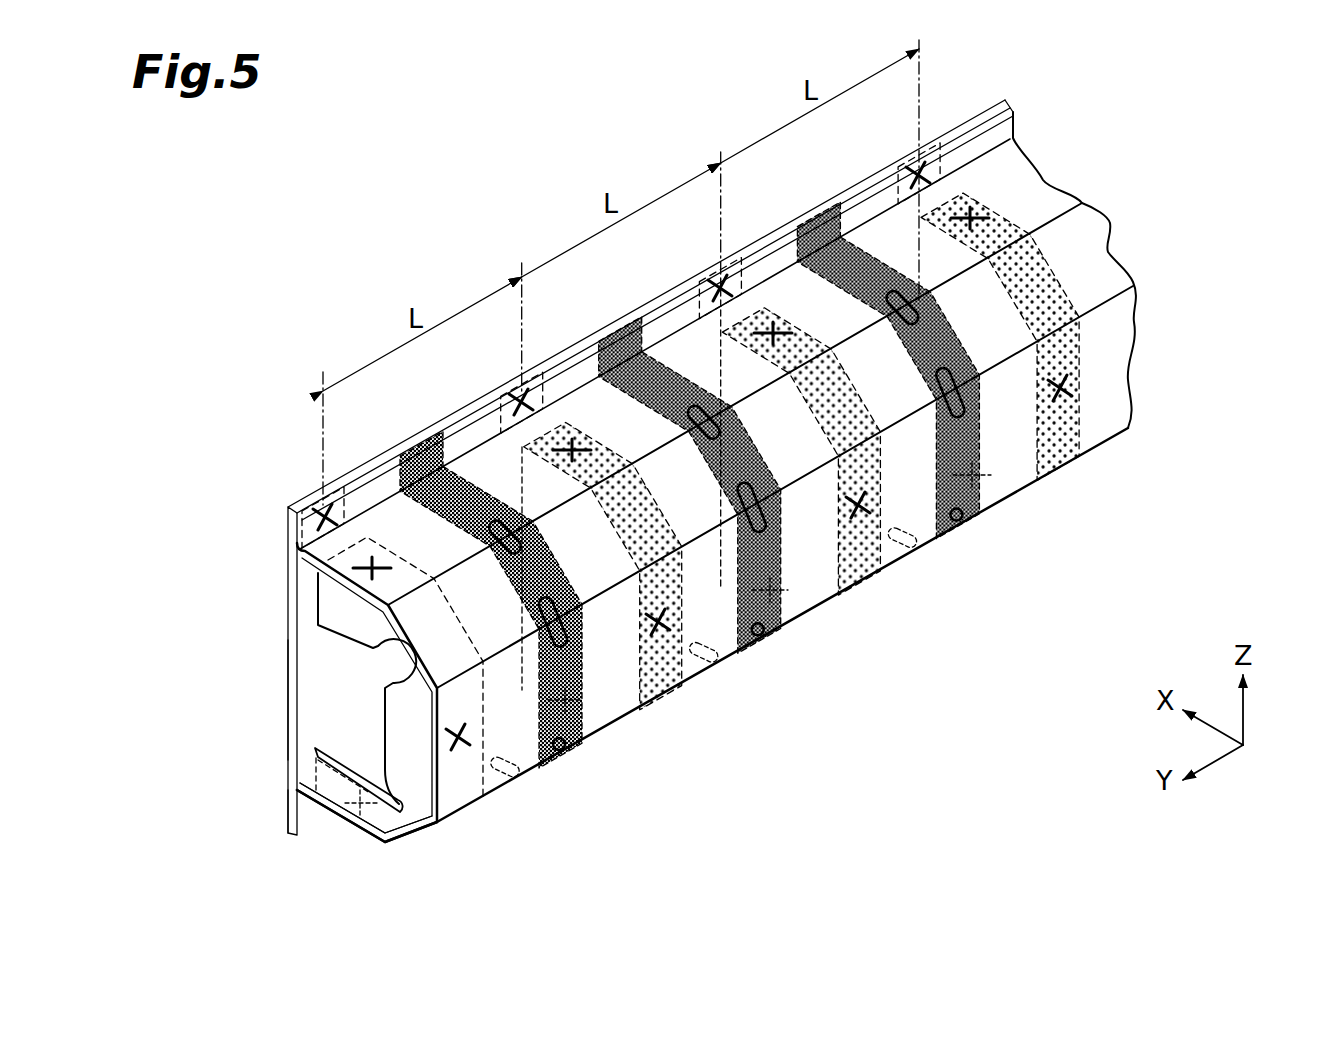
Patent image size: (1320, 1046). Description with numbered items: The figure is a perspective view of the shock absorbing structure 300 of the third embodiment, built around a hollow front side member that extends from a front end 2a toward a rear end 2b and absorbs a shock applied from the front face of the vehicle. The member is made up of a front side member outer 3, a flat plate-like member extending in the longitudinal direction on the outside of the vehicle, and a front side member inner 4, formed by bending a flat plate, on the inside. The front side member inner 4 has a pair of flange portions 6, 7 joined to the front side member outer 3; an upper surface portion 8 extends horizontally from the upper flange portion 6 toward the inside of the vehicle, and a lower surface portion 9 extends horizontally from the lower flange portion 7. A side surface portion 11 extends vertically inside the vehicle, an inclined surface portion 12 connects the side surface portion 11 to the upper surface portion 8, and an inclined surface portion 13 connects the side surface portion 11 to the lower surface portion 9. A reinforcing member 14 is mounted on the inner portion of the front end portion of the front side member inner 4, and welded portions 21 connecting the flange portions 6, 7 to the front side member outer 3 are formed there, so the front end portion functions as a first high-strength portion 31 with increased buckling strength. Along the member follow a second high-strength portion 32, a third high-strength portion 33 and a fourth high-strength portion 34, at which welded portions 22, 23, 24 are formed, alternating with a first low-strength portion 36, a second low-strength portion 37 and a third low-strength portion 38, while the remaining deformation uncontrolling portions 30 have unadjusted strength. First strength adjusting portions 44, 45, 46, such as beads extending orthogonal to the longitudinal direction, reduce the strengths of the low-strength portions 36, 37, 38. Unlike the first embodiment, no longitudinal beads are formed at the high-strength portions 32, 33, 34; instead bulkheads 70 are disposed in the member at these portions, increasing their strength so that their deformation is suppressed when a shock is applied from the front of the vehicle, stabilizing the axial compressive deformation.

The shock absorbing structure 300 is at (452, 160).
The front end 2a is at (288, 708).
The rear end 2b is at (1147, 255).
The front side member outer 3 is at (290, 640).
The front side member inner 4 is at (1180, 196).
The flange portion 6 is at (1022, 117).
The flange portion 7 is at (312, 822).
The upper surface portion 8 is at (1033, 185).
The lower surface portion 9 is at (340, 828).
The side surface portion 11 is at (1115, 345).
The inclined surface portion 12 is at (1090, 232).
The inclined surface portion 13 is at (420, 843).
The reinforcing member 14 is at (397, 722).
The welded portion 21 is at (318, 522).
The welded portion 22 is at (505, 400).
The welded portion 23 is at (713, 290).
The welded portion 24 is at (913, 173).
The deformation uncontrolling portion 30 is at (407, 510).
The first high-strength portion 31 is at (291, 495).
The second high-strength portion 32 is at (507, 380).
The third high-strength portion 33 is at (705, 265).
The fourth high-strength portion 34 is at (903, 153).
The first low-strength portion 36 is at (397, 442).
The second low-strength portion 37 is at (605, 323).
The third low-strength portion 38 is at (802, 210).
The first strength adjusting portion 44 is at (522, 540).
The first strength adjusting portion 45 is at (765, 470).
The first strength adjusting portion 46 is at (930, 305).
The bulkhead 70 is at (650, 702).